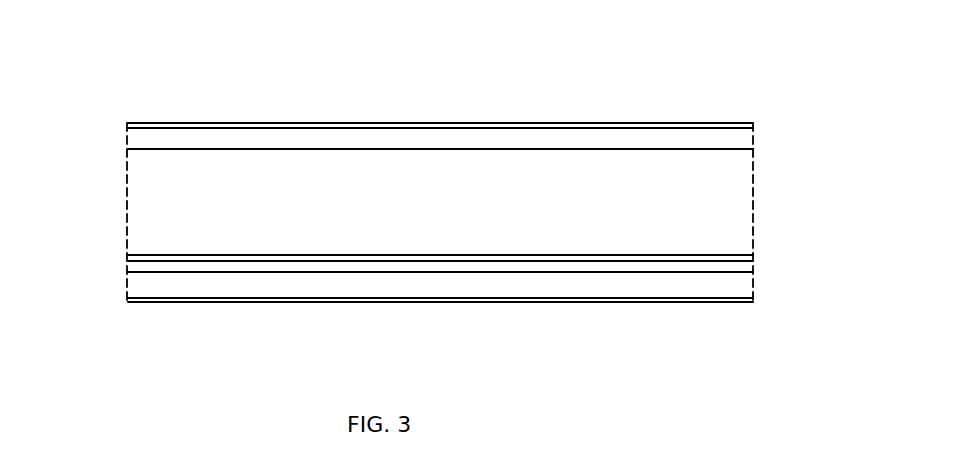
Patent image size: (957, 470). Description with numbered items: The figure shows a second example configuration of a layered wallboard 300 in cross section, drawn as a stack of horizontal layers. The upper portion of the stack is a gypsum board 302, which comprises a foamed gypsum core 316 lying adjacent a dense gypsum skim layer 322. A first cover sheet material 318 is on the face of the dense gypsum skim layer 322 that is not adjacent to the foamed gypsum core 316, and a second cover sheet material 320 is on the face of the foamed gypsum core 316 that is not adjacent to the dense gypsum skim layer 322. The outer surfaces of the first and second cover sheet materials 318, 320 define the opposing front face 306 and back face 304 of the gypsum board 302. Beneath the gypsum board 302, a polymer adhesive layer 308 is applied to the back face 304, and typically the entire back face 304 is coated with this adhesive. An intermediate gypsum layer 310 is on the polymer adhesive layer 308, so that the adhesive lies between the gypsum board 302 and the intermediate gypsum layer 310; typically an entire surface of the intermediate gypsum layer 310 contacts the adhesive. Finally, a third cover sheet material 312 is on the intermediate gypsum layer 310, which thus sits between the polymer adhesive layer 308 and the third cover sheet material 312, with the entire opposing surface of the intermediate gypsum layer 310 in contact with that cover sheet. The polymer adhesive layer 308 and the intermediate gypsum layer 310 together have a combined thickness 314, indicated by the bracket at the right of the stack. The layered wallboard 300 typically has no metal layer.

The layered wallboard 300 is at (196, 102).
The gypsum board 302 is at (757, 123).
The back face 304 is at (138, 261).
The front face 306 is at (142, 124).
The polymer adhesive layer 308 is at (357, 265).
The intermediate gypsum layer 310 is at (134, 283).
The third cover sheet material 312 is at (188, 302).
The combined thickness 314 is at (757, 258).
The foamed gypsum core 316 is at (462, 204).
The first cover sheet material 318 is at (753, 126).
The second cover sheet material 320 is at (495, 255).
The dense gypsum skim layer 322 is at (500, 138).